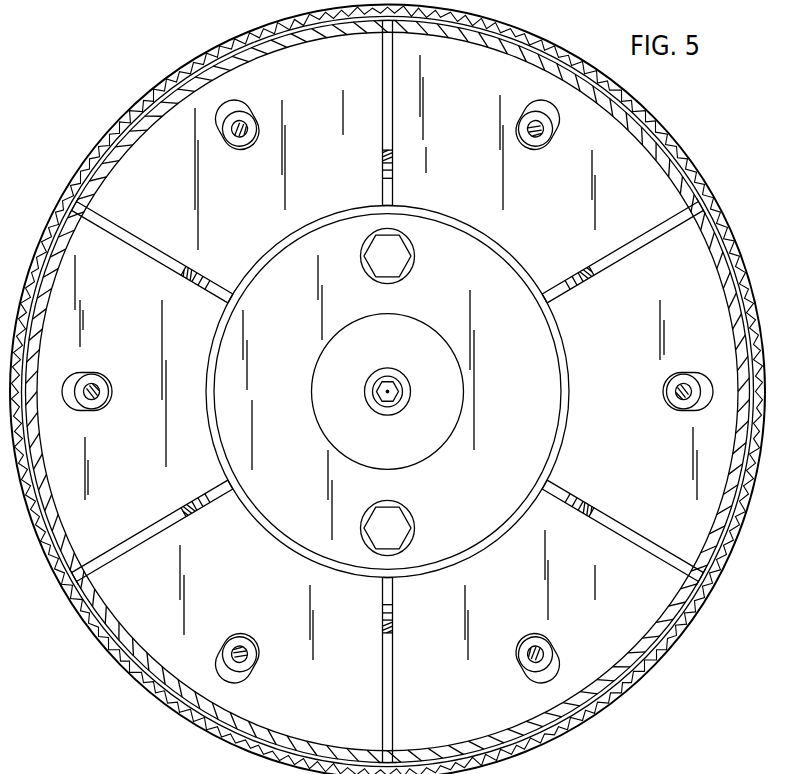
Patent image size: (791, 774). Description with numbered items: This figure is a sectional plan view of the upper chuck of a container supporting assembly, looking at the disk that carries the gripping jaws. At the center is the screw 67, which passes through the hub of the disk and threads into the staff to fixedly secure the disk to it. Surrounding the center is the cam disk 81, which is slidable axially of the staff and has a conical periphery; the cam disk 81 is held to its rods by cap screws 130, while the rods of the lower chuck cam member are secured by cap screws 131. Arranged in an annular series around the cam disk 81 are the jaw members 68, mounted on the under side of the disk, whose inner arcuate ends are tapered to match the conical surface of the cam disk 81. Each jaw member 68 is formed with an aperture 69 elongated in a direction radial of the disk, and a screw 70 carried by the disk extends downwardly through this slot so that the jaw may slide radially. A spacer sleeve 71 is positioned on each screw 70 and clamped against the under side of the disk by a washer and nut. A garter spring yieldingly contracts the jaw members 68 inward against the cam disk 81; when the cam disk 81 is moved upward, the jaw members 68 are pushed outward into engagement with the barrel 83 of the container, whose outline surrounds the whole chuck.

The barrel 83 is at (143, 104).
The cam disk 81 is at (457, 519).
The screw 67 is at (395, 402).
The cap screws 130 is at (400, 270).
The cap screws 131 is at (400, 534).
The jaw members 68 is at (320, 100).
The aperture 69 is at (238, 106).
The screw 70 is at (540, 135).
The spacer sleeve 71 is at (552, 130).